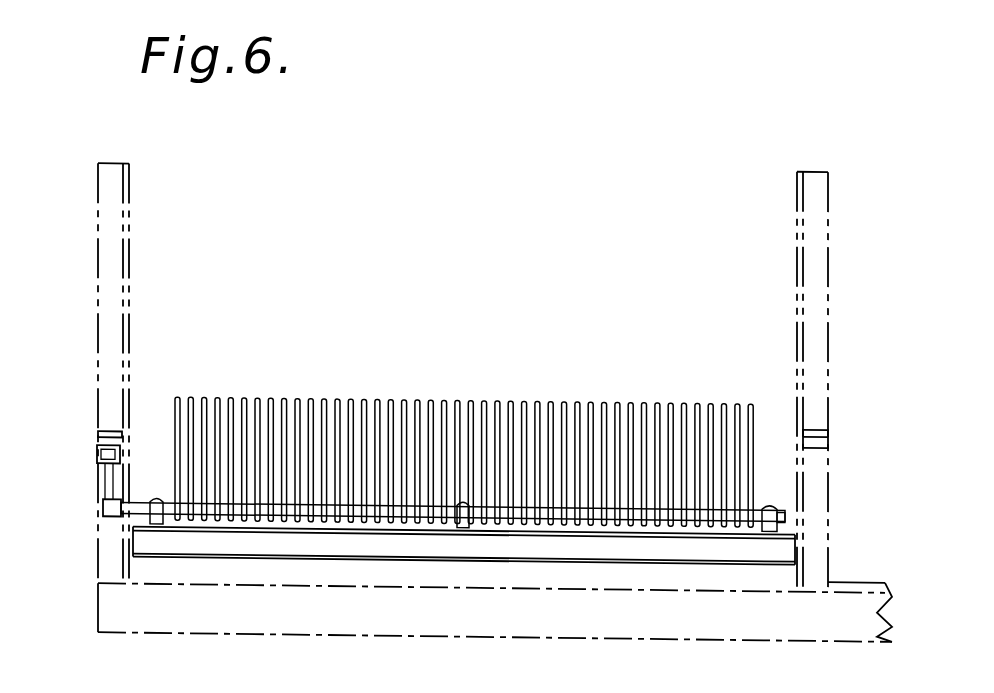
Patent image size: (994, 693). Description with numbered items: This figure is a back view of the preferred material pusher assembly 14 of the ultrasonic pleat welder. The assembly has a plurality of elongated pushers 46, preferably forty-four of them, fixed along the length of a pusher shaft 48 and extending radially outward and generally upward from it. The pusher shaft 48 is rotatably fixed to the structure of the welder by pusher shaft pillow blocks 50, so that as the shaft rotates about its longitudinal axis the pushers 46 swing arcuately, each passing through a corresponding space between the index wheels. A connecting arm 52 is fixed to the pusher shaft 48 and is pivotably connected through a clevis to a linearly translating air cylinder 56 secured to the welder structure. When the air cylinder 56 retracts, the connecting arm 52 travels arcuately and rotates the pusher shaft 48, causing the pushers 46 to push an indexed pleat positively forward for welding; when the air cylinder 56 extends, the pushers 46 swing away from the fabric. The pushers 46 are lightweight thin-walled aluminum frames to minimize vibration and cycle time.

The material pusher assembly 14 is at (418, 358).
The pushers 46 is at (591, 393).
The pusher shaft 48 is at (135, 506).
The pusher shaft pillow blocks 50 is at (157, 495).
The connecting arm 52 is at (104, 477).
The air cylinder 56 is at (97, 451).